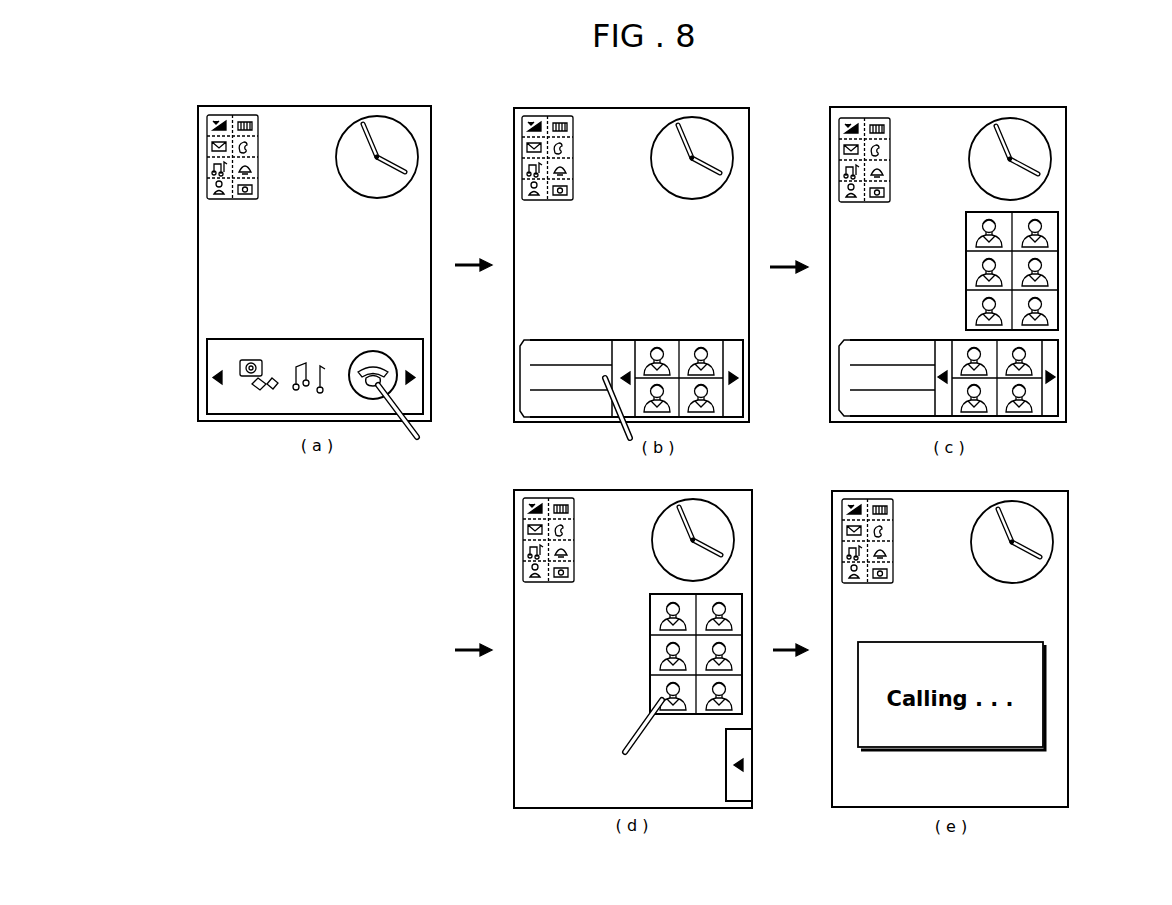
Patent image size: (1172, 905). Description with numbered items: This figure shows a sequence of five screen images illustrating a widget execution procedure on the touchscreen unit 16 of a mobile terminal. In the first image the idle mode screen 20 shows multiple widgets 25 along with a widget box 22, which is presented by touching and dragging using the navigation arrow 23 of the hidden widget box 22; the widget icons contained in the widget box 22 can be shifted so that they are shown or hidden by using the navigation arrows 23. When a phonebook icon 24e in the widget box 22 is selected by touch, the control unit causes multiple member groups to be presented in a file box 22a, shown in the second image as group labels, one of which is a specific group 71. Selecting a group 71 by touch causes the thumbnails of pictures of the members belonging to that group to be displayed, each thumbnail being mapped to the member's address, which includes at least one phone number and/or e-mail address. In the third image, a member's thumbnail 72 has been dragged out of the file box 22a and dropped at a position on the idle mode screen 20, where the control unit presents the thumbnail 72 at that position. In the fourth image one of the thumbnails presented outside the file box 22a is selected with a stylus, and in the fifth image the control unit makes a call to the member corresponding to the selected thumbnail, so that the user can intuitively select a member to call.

The touchscreen unit 16 is at (195, 77).
The idle mode screen 20 is at (381, 106).
The widget box 22 is at (196, 379).
The navigation arrow 23 is at (214, 372).
The phonebook icon 24e is at (376, 400).
The widgets 25 is at (350, 110).
The group 71 is at (527, 383).
The file box 22a is at (749, 350).
The thumbnail 72 is at (665, 418).